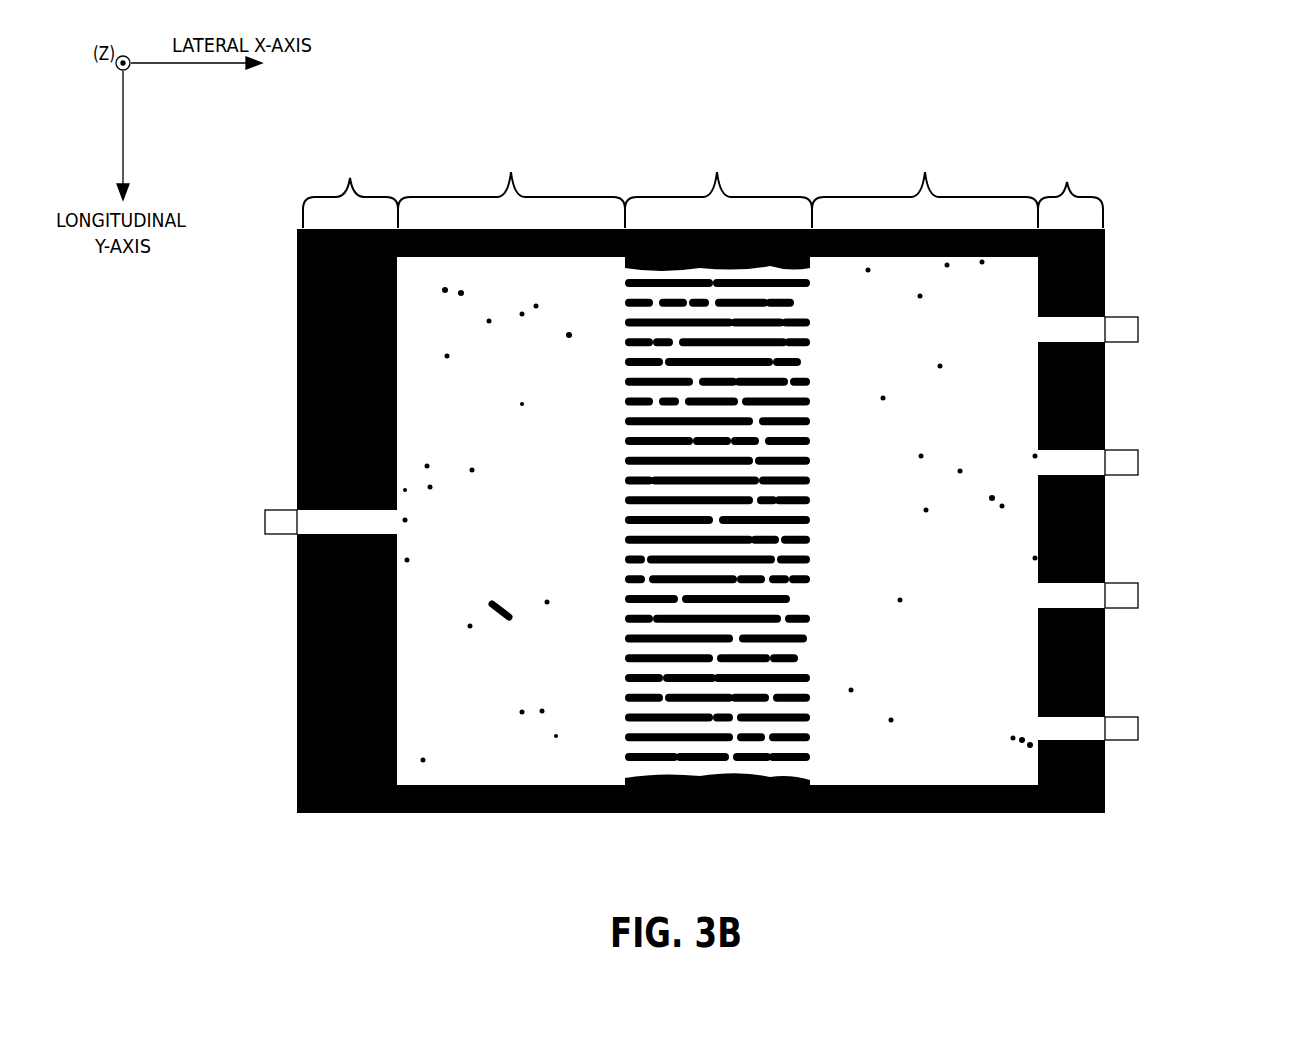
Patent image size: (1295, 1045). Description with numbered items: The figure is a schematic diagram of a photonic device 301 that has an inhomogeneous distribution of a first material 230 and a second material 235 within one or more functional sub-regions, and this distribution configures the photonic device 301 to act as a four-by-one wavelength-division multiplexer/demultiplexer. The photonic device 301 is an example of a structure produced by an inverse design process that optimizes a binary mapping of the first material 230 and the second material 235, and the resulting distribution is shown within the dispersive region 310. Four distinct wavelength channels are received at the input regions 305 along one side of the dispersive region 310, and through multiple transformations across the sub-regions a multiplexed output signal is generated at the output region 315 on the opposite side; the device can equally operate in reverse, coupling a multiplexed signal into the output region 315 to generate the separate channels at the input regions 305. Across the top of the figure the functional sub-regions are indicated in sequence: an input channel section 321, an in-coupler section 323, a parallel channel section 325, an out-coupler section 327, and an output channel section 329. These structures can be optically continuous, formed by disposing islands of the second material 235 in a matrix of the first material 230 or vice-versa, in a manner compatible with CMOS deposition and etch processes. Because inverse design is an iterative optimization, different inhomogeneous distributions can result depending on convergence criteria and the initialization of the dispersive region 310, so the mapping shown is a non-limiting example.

The photonic device 301 is at (1232, 80).
The input regions 305 is at (1112, 320).
The dispersive region 310 is at (1108, 797).
The output region 315 is at (272, 512).
The first material 230 is at (528, 502).
The second material 235 is at (809, 363).
The input channel section 321 is at (1096, 164).
The in-coupler section 323 is at (925, 169).
The parallel channel section 325 is at (718, 160).
The out-coupler section 327 is at (511, 160).
The output channel section 329 is at (362, 160).